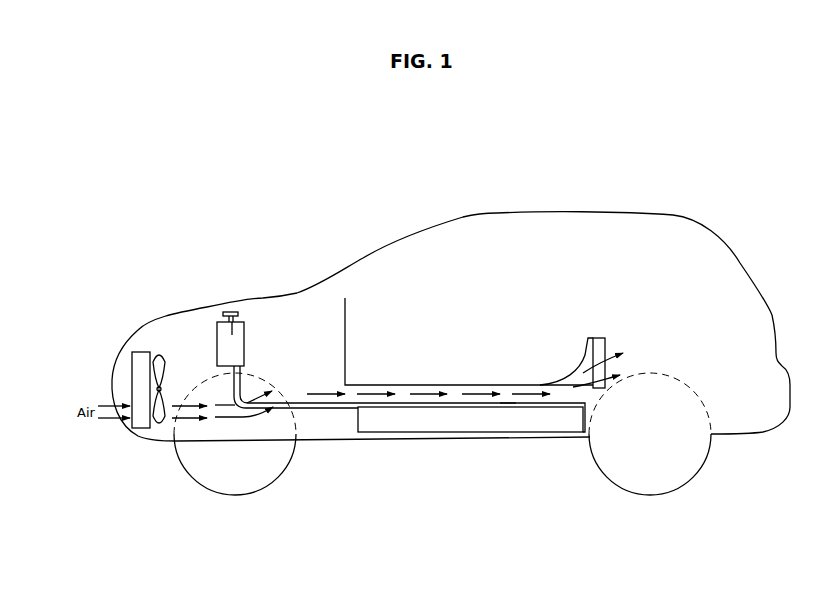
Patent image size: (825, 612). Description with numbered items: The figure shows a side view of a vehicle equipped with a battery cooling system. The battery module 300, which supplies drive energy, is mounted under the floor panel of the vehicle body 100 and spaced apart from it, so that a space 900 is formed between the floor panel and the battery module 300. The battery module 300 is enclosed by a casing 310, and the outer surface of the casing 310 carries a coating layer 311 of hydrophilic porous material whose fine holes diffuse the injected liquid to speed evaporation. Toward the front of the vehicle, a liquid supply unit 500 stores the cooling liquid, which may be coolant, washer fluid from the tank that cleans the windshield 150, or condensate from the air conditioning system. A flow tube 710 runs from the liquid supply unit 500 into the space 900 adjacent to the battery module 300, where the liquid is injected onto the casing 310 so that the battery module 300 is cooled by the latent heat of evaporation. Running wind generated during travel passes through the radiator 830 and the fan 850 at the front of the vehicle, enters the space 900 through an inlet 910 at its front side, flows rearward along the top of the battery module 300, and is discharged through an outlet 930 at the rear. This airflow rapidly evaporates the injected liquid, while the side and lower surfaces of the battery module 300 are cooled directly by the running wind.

The vehicle body 100 is at (277, 289).
The windshield 150 is at (362, 255).
The coating layer 311 is at (508, 404).
The liquid supply unit 500 is at (233, 335).
The fan 850 is at (160, 352).
The radiator 830 is at (137, 368).
The flow tube 710 is at (303, 409).
The inlet 910 is at (352, 394).
The space 900 is at (431, 394).
The battery module 300 is at (387, 443).
The casing 310 is at (467, 420).
The outlet 930 is at (564, 392).